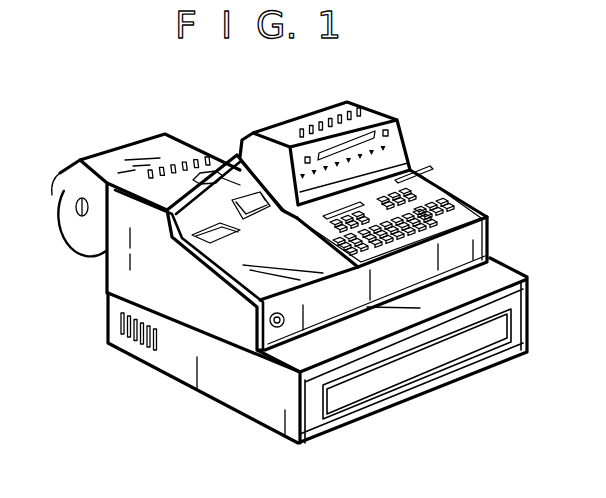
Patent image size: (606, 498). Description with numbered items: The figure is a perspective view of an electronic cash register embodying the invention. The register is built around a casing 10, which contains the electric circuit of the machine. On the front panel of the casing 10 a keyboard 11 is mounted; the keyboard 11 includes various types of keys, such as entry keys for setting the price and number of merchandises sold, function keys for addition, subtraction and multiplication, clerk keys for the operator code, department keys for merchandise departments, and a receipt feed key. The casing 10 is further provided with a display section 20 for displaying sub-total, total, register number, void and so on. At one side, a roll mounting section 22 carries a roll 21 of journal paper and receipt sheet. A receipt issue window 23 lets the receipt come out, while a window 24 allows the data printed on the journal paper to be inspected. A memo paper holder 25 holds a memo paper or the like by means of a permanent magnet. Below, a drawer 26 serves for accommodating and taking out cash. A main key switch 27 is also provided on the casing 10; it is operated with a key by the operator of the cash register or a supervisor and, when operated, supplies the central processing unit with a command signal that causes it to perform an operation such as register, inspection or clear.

The casing 10 is at (107, 267).
The keyboard 11 is at (460, 218).
The display section 20 is at (384, 153).
The roll 21 is at (66, 237).
The roll mounting section 22 is at (118, 157).
The receipt issue window 23 is at (200, 246).
The window 24 is at (248, 217).
The memo paper holder 25 is at (238, 264).
The drawer 26 is at (477, 347).
The main key switch 27 is at (287, 318).